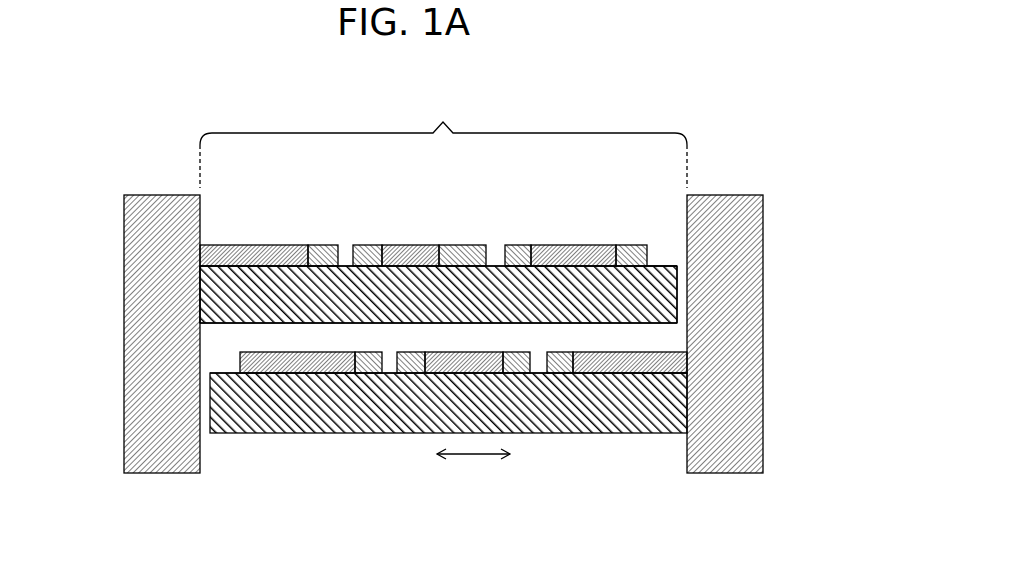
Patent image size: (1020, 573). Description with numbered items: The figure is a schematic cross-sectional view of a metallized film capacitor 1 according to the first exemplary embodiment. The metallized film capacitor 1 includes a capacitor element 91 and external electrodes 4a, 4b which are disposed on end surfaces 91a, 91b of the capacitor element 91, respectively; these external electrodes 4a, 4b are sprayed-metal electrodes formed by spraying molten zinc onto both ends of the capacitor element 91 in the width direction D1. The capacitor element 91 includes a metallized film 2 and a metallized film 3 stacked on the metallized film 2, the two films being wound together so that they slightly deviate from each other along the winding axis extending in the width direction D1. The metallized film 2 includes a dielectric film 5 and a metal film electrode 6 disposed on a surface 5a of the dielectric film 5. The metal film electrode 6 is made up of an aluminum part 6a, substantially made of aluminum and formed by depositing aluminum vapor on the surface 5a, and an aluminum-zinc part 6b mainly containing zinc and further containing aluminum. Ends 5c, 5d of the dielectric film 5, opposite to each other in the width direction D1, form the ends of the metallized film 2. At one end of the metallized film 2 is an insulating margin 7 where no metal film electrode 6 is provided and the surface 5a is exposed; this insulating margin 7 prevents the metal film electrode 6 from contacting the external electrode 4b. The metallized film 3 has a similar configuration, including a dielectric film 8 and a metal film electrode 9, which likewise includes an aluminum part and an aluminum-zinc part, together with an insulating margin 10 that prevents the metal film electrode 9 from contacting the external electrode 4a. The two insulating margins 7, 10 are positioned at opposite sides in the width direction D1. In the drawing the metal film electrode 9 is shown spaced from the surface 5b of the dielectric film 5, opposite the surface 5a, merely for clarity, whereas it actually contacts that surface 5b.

The metallized film capacitor 1 is at (760, 165).
The metallized film 2 is at (445, 329).
The metallized film 3 is at (277, 418).
The external electrode 4a is at (160, 289).
The external electrode 4b is at (730, 268).
The dielectric film 5 is at (677, 294).
The surface of dielectric film 5a is at (652, 263).
The surface of dielectric film 5b is at (613, 325).
The end of dielectric film 5c is at (200, 284).
The end of dielectric film 5d is at (677, 307).
The metal film electrode 6 is at (423, 209).
The aluminum part 6a is at (270, 243).
The aluminum-zinc part 6b is at (323, 243).
The insulating margin 7 is at (667, 263).
The dielectric film 8 is at (383, 427).
The metal film electrode 9 is at (250, 362).
The insulating margin 10 is at (210, 377).
The capacitor element 91 is at (443, 121).
The end surface of capacitor element 91a is at (198, 187).
The end surface of capacitor element 91b is at (689, 185).
The width direction D1 is at (473, 455).